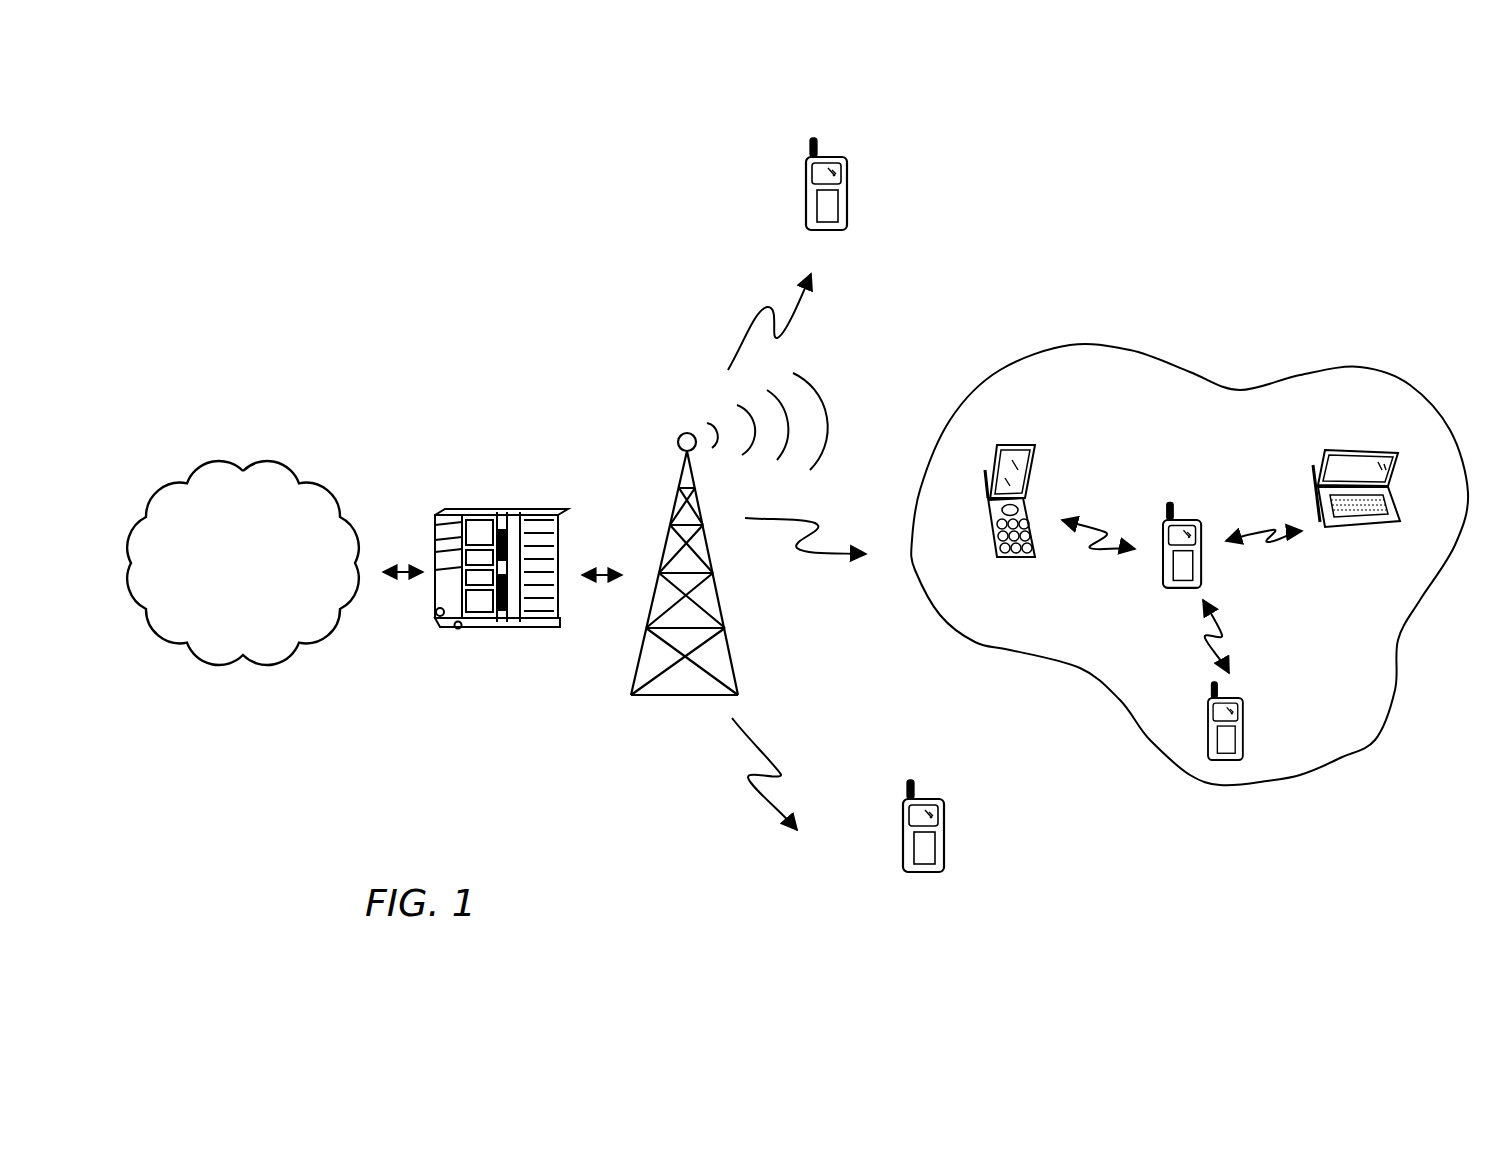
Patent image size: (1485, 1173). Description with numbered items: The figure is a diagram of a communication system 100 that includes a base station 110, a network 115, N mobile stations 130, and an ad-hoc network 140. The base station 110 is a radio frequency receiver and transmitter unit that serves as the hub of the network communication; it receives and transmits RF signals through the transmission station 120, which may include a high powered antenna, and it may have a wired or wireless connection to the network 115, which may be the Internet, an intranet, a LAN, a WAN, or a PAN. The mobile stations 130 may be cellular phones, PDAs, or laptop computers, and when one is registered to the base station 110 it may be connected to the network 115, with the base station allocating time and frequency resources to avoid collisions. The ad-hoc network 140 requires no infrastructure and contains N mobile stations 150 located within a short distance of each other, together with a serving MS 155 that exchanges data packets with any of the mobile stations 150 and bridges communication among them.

The system 100 is at (1318, 160).
The base station 110 is at (474, 484).
The network 115 is at (270, 465).
The transmission station 120 is at (727, 626).
The mobile stations 130 is at (848, 192).
The ad-hoc network 140 is at (1313, 381).
The mobile stations 150 is at (1278, 735).
The serving MS 155 is at (1186, 520).